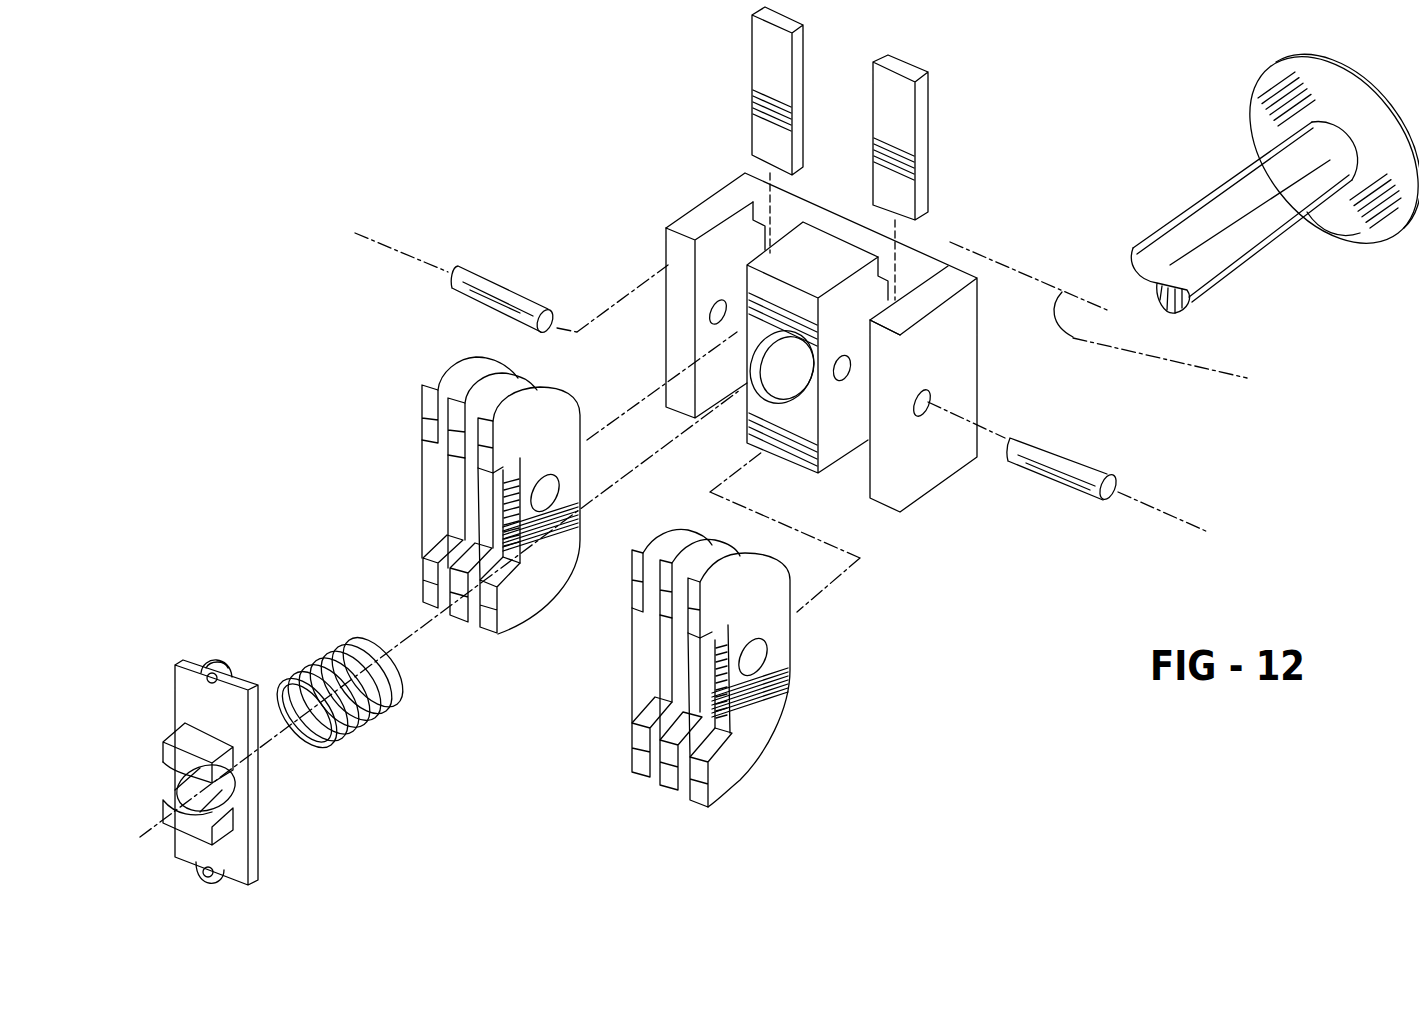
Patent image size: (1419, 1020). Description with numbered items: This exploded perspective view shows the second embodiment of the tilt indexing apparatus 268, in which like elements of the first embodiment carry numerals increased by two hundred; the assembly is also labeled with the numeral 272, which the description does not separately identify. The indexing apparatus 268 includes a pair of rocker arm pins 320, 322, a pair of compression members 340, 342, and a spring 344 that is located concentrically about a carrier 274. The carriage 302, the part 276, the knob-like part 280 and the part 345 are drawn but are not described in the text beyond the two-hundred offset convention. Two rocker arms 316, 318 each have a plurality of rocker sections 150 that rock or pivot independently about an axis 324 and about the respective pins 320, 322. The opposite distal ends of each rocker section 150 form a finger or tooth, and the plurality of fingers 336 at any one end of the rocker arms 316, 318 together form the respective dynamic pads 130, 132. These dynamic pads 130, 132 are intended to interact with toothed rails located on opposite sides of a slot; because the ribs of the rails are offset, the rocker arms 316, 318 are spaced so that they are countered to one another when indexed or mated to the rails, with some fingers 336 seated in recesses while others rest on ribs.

The indexing apparatus 268 is at (393, 148).
The clamp assembly 272 is at (779, 446).
The carrier 274 is at (1200, 218).
The shaft axis 276 is at (1171, 340).
The knob 280 is at (1343, 247).
The housing 302 is at (967, 270).
The rocker arm 316 is at (380, 415).
The rocker arm 318 is at (805, 650).
The rocker arm pin 320 is at (503, 283).
The rocker arm pin 322 is at (1083, 457).
The axis 324 is at (363, 237).
The fingers 336 is at (425, 588).
The compression member 340 is at (748, 97).
The compression member 342 is at (930, 143).
The spring 344 is at (367, 727).
The bracket 345 is at (190, 654).
The rocker sections 150 is at (432, 611).
The dynamic pad 132 is at (697, 798).
The dynamic pad 130 is at (728, 558).